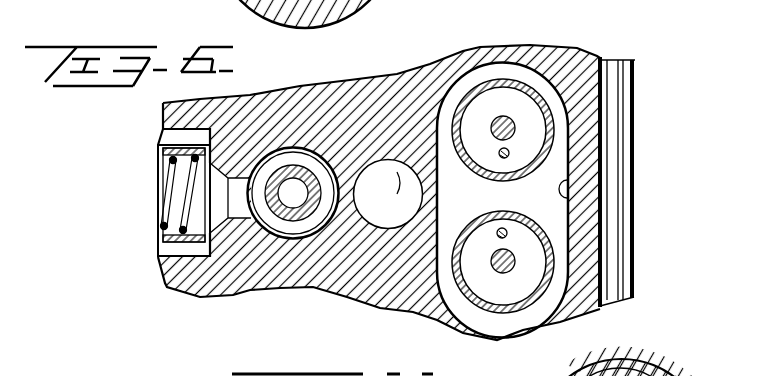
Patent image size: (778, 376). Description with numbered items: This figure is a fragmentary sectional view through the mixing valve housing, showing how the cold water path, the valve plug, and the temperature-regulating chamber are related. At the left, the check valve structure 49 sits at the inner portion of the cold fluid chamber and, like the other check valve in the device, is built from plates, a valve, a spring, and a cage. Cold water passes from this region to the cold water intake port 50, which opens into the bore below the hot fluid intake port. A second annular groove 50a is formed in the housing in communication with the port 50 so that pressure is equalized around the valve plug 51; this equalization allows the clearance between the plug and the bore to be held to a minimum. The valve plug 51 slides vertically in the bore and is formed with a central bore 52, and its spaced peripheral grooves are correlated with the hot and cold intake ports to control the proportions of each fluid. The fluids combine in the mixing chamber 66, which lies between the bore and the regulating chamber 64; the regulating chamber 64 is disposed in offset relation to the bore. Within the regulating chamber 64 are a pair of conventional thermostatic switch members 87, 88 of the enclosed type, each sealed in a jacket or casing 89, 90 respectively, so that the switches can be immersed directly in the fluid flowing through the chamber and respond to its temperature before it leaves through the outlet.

The check valve structure 49 is at (170, 248).
The cold water intake port 50 is at (250, 204).
The second annular groove 50a is at (263, 222).
The valve plug 51 is at (340, 203).
The central bore 52 is at (294, 188).
The regulating chamber 64 is at (560, 192).
The mixing chamber 66 is at (391, 197).
The thermostatic switch member 87 is at (527, 82).
The thermostatic switch member 88 is at (518, 312).
The jacket or casing 89 is at (506, 80).
The jacket or casing 90 is at (477, 308).